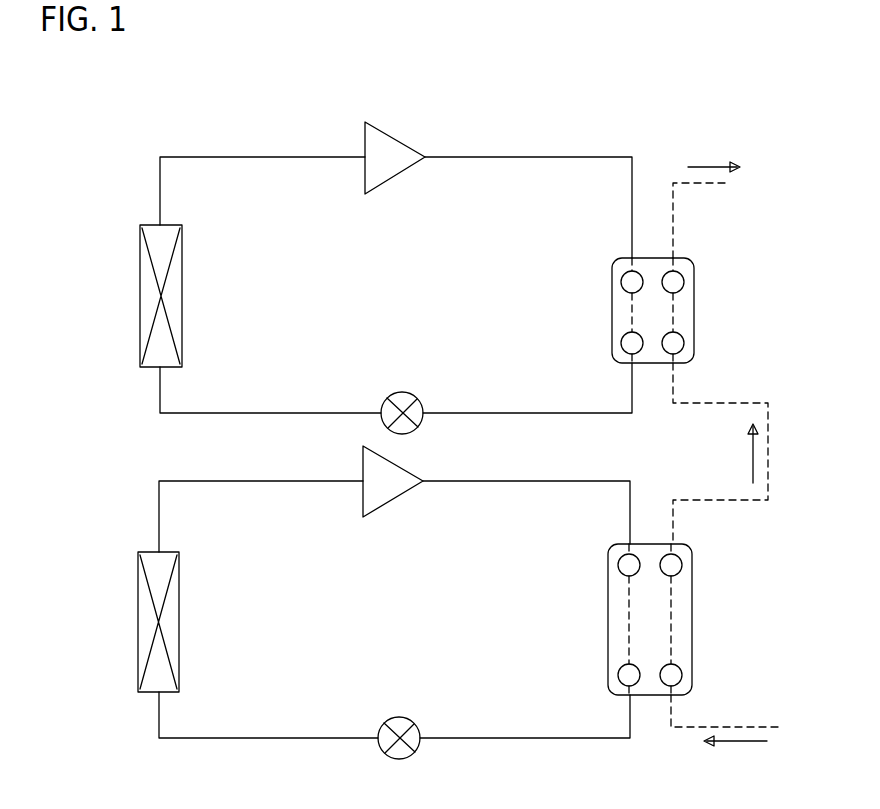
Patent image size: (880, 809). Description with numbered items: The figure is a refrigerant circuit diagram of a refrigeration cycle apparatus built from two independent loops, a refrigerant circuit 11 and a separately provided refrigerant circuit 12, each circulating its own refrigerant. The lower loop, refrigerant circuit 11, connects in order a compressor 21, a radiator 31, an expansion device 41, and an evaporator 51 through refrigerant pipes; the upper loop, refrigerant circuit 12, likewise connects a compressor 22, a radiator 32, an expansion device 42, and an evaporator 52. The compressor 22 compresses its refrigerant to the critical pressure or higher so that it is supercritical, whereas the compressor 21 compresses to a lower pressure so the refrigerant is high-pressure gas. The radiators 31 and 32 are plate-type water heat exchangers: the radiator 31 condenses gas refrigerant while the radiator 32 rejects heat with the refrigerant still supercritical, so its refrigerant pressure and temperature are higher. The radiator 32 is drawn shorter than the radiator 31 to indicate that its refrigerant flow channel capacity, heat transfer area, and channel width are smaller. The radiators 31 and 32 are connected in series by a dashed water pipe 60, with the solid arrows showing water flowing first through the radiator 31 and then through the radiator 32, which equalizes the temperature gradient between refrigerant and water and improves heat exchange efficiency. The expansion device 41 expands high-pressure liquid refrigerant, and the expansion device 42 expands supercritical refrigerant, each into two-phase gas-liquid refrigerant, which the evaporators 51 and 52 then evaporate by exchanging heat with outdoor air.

The refrigerant circuit 11 is at (508, 737).
The refrigerant circuit 12 is at (503, 157).
The compressor 21 is at (398, 505).
The compressor 22 is at (399, 142).
The radiator 31 is at (607, 625).
The radiator 32 is at (611, 302).
The expansion device 41 is at (400, 717).
The expansion device 42 is at (402, 392).
The evaporator 51 is at (180, 614).
The evaporator 52 is at (183, 290).
The water pipe 60 is at (750, 727).